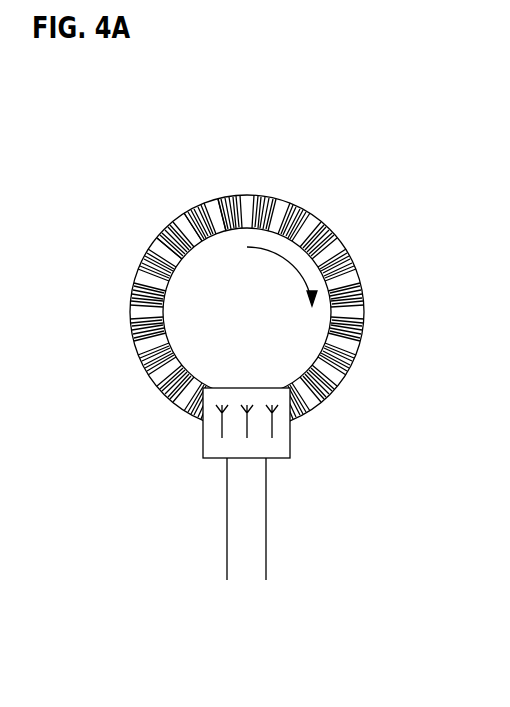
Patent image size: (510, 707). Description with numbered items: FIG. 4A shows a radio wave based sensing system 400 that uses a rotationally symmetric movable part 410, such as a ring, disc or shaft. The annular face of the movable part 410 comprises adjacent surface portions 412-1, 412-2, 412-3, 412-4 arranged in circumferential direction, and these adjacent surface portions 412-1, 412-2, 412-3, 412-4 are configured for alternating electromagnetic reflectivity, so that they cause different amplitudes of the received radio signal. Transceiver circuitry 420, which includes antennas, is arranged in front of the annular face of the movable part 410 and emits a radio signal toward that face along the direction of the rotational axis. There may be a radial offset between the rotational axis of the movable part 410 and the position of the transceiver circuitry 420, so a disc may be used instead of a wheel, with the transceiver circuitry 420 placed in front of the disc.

The antenna assembly 400 is at (211, 337).
The movable part 410 is at (197, 270).
The surface portion 412-1 is at (148, 234).
The surface portion 412-2 is at (179, 218).
The surface portion 412-3 is at (206, 226).
The surface portion 412-4 is at (211, 211).
The transceiver circuitry 420 is at (290, 433).